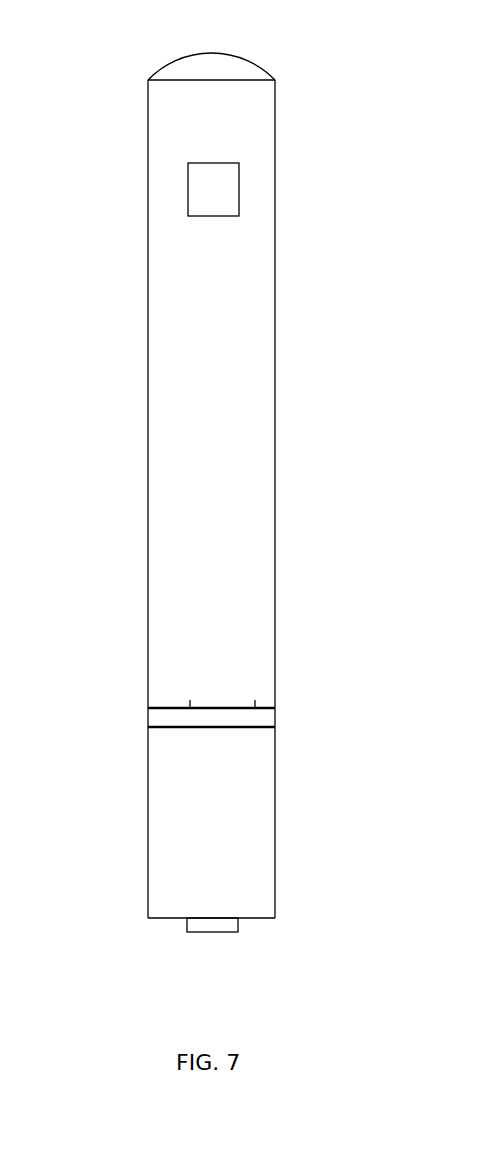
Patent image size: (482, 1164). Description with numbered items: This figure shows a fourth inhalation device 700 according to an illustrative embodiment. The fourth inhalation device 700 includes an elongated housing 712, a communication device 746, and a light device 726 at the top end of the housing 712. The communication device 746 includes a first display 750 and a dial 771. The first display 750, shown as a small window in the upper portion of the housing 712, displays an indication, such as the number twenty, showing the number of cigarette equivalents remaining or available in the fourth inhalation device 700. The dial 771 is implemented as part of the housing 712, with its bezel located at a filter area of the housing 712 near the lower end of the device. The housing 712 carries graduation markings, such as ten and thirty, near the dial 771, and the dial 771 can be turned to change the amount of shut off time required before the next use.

The fourth inhalation device 700 is at (233, 471).
The light device 726 is at (251, 64).
The housing 712 is at (277, 118).
The first display 750 is at (239, 192).
The communication device 746 is at (251, 220).
The dial 771 is at (276, 839).